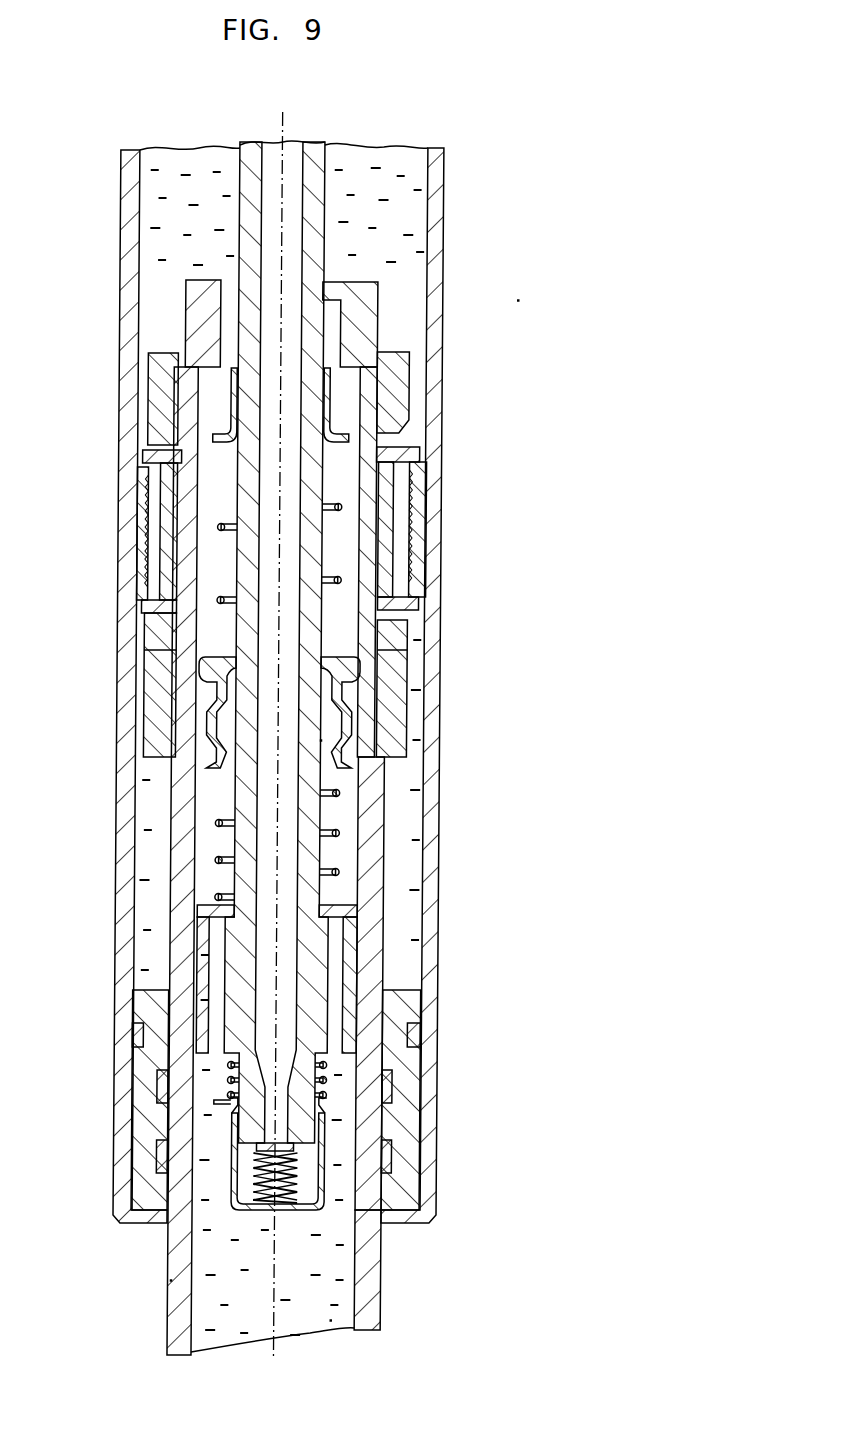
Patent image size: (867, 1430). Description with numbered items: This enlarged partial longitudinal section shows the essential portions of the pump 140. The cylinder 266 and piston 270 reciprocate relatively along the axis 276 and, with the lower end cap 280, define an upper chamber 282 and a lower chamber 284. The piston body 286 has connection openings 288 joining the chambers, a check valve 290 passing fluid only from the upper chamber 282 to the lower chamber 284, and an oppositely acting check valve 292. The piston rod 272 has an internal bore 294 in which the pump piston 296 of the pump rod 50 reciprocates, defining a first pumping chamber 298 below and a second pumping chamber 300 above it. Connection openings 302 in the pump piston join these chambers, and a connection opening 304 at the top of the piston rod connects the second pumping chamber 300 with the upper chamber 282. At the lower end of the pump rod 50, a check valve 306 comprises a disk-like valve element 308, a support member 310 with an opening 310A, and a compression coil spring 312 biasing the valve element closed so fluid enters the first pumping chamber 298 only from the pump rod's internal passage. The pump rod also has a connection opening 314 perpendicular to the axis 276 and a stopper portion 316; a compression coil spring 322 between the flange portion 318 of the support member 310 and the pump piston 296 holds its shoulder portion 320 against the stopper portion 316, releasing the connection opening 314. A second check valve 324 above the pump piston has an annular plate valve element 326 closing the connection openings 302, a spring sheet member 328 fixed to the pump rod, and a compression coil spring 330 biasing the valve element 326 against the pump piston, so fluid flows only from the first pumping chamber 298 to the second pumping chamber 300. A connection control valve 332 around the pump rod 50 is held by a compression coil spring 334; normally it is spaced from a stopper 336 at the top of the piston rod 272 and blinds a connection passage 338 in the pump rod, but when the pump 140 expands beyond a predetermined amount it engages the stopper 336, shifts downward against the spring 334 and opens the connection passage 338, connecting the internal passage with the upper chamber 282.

The pump rod 50 is at (241, 172).
The pump 140 is at (527, 311).
The cylinder 266 is at (124, 262).
The piston 270 is at (172, 777).
The piston rod 272 is at (372, 1300).
The axis 276 is at (318, 160).
The end cap 280 is at (165, 1093).
The upper chamber 282 is at (412, 220).
The lower chamber 284 is at (415, 906).
The piston body 286 is at (420, 526).
The connection openings 288 is at (143, 513).
The check valve 290 is at (412, 620).
The check valve 292 is at (147, 446).
The internal bore 294 is at (208, 1268).
The pump piston 296 is at (362, 1006).
The first pumping chamber 298 is at (340, 1322).
The second pumping chamber 300 is at (203, 640).
The connection openings 302 is at (218, 968).
The connection opening 304 is at (336, 303).
The check valve 306 is at (335, 1214).
The valve element 308 is at (338, 1147).
The support member 310 is at (242, 1212).
The opening 310A is at (177, 1162).
The compression coil spring 312 is at (297, 1214).
The connection opening 314 is at (142, 1040).
The stopper portion 316 is at (232, 1128).
The flange portion 318 is at (340, 1095).
The shoulder portion 320 is at (333, 1116).
The compression coil spring 322 is at (333, 1065).
The second check valve 324 is at (200, 894).
The valve element 326 is at (348, 898).
The spring sheet member 328 is at (347, 743).
The compression coil spring 330 is at (352, 826).
The connection control valve 332 is at (338, 406).
The compression coil spring 334 is at (410, 487).
The stopper 336 is at (205, 356).
The connection passage 338 is at (150, 382).